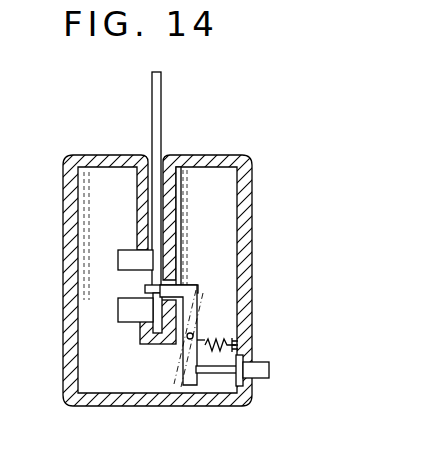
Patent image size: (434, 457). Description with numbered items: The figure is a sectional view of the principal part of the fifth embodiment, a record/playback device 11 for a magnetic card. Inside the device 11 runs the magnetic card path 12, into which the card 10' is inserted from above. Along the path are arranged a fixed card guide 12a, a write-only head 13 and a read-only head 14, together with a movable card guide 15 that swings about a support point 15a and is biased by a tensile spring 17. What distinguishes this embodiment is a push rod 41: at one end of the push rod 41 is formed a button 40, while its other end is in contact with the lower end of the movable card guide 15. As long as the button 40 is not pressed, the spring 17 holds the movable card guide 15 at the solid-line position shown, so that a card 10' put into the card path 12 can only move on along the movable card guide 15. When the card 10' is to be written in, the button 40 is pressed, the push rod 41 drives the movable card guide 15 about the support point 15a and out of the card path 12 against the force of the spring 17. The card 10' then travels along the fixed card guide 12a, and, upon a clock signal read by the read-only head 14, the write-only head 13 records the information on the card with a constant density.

The card 10' is at (183, 174).
The record/playback device 11 is at (255, 200).
The magnetic card path 12 is at (175, 210).
The fixed card guide 12a is at (158, 344).
The write-only head 13 is at (120, 302).
The read-only head 14 is at (132, 255).
The movable card guide 15 is at (190, 292).
The support point 15a is at (198, 342).
The tensile spring 17 is at (234, 345).
The button 40 is at (270, 372).
The push rod 41 is at (242, 381).